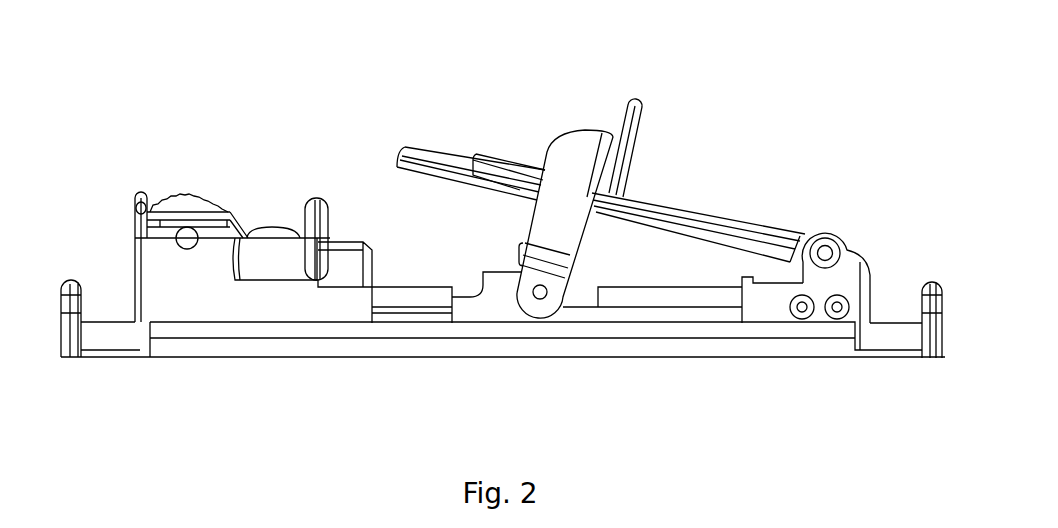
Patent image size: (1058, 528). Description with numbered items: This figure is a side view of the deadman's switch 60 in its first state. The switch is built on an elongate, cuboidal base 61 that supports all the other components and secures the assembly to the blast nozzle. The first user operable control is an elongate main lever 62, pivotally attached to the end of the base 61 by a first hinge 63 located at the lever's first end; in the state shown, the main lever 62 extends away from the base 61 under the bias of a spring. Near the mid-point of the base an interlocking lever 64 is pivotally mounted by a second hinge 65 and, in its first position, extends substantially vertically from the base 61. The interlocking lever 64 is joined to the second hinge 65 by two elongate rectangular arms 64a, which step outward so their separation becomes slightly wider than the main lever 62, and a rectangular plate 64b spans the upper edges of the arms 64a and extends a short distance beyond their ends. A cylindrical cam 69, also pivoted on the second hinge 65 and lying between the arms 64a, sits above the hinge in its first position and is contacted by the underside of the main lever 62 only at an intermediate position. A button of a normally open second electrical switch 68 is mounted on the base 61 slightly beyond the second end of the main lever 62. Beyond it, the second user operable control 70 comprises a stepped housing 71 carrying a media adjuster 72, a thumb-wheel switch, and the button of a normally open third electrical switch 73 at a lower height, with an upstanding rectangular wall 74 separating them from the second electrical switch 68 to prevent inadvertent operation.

The deadman's switch 60 is at (750, 100).
The base 61 is at (532, 357).
The main lever 62 is at (672, 200).
The first hinge 63 is at (824, 238).
The interlocking lever 64 is at (558, 183).
The arms 64a is at (590, 225).
The plate 64b is at (625, 112).
The second hinge 65 is at (547, 290).
The second electrical switch 68 is at (348, 242).
The cam 69 is at (520, 248).
The second user operable control 70 is at (112, 253).
The housing 71 is at (233, 220).
The media adjuster 72 is at (183, 197).
The third electrical switch 73 is at (272, 227).
The wall 74 is at (313, 198).